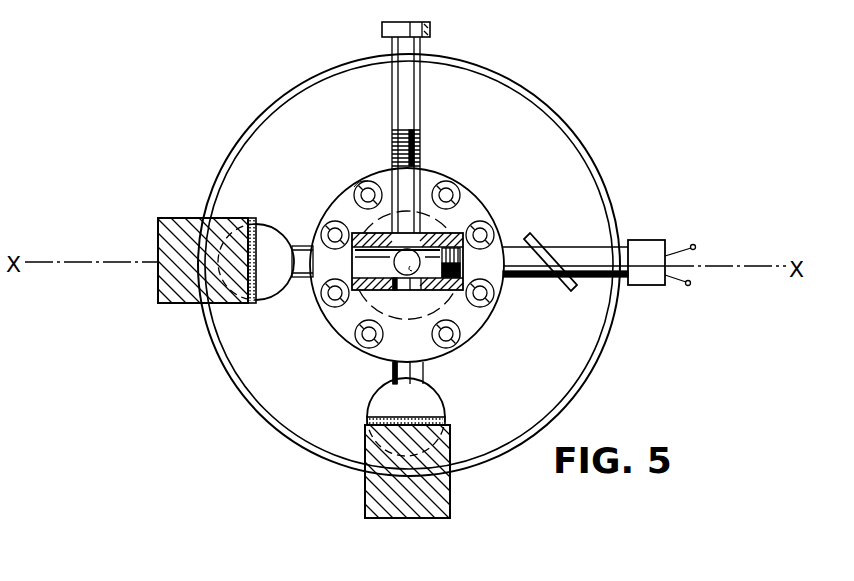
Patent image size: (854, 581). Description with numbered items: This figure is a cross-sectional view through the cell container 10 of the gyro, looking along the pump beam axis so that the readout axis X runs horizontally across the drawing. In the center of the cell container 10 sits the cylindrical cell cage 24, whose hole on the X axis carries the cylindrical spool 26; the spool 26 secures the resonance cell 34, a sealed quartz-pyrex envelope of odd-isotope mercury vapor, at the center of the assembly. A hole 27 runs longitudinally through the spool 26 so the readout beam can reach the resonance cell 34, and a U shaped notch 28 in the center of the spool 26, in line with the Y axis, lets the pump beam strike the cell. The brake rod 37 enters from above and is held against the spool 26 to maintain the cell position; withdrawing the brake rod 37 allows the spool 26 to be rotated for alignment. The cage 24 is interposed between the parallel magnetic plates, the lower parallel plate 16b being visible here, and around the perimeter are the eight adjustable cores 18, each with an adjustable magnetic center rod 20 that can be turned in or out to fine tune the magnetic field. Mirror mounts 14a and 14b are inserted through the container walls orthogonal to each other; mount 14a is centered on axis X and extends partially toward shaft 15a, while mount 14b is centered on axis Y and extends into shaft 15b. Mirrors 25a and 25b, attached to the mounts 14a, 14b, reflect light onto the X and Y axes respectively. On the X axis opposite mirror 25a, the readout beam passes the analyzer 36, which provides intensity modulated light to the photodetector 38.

The cell container 10 is at (532, 120).
The mirror mount 14a is at (190, 295).
The mirror mount 14b is at (437, 490).
The mirror 15a is at (277, 256).
The shaft 15b is at (398, 398).
The parallel plate 16b is at (368, 183).
The adjustable core 18 is at (356, 191).
The adjustable magnetic center rod 20 is at (366, 188).
The cell cage 24 is at (448, 222).
The mirror 25a is at (286, 243).
The mirror 25b is at (412, 408).
The cylindrical spool 26 is at (414, 291).
The hole 27 is at (358, 265).
The U shaped notch 28 is at (468, 275).
The resonance cell 34 is at (410, 274).
The analyzer 36 is at (560, 288).
The brake rod 37 is at (424, 30).
The photodetector 38 is at (645, 280).